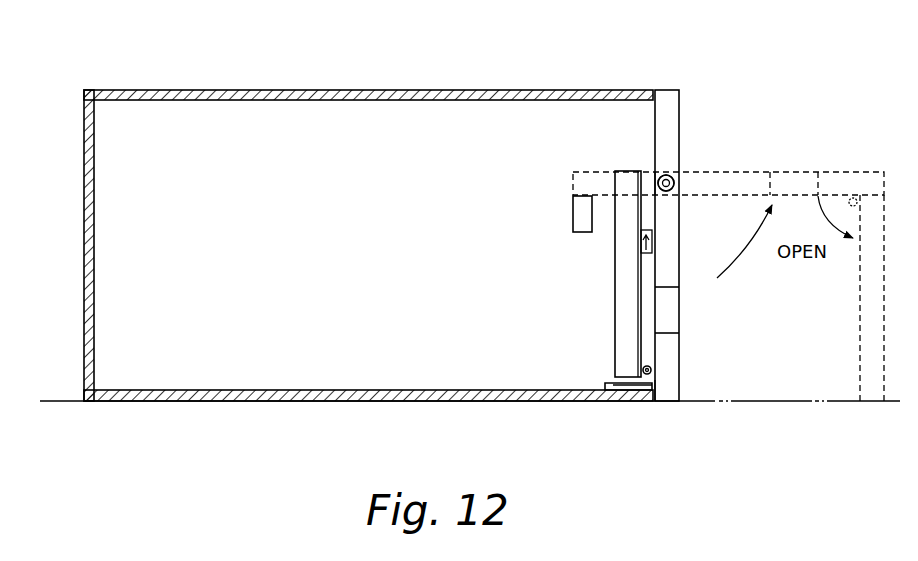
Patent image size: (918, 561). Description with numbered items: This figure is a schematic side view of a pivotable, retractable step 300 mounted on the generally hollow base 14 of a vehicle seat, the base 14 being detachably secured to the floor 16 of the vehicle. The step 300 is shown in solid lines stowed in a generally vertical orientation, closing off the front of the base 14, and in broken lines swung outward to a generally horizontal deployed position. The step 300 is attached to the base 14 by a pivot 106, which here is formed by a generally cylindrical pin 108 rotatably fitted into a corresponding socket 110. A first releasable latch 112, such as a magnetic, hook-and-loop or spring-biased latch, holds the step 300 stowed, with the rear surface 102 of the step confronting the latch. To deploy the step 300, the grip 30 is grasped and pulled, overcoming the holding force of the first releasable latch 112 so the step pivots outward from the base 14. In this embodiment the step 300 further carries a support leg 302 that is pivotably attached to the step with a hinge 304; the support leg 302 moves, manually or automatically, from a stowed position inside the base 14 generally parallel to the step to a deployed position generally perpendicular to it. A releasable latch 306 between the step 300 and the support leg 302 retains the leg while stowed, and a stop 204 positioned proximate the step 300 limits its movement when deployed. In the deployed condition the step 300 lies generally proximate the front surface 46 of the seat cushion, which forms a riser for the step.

The base 14 is at (470, 89).
The floor 16 is at (780, 404).
The grip 30 is at (660, 313).
The front surface of seat cushion 46 is at (680, 352).
The rear surface 102 is at (680, 378).
The pivot 106 is at (654, 176).
The pin 108 is at (670, 192).
The socket 110 is at (670, 176).
The first releasable latch 112 is at (606, 384).
The stop 204 is at (566, 215).
The step 300 is at (684, 107).
The support leg 302 is at (615, 296).
The hinge 304 is at (643, 370).
The releasable latch 306 is at (645, 242).